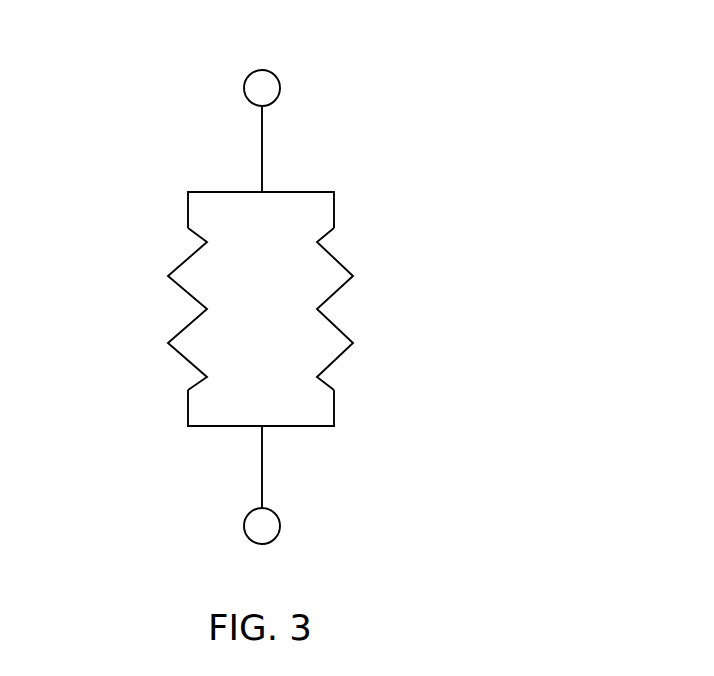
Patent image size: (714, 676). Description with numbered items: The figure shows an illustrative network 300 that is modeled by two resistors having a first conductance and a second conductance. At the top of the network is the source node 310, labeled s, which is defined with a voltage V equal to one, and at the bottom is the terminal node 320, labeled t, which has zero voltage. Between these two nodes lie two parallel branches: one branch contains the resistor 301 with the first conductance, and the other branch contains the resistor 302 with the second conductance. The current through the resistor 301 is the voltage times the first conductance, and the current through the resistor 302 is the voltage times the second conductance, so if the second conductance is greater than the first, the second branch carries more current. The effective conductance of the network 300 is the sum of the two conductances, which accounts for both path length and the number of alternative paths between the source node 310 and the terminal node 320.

The network 300 is at (82, 78).
The source node 310 is at (251, 74).
The terminal node 320 is at (248, 541).
The resistor 301 is at (172, 295).
The resistor 302 is at (352, 295).